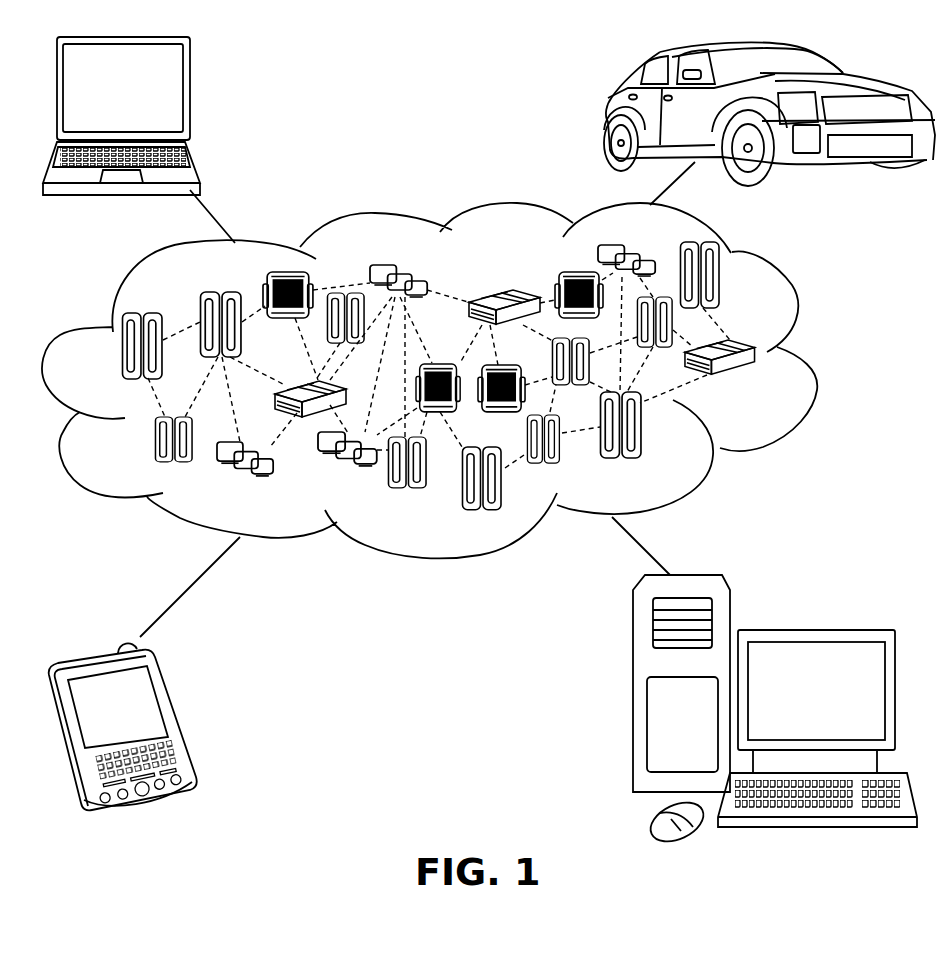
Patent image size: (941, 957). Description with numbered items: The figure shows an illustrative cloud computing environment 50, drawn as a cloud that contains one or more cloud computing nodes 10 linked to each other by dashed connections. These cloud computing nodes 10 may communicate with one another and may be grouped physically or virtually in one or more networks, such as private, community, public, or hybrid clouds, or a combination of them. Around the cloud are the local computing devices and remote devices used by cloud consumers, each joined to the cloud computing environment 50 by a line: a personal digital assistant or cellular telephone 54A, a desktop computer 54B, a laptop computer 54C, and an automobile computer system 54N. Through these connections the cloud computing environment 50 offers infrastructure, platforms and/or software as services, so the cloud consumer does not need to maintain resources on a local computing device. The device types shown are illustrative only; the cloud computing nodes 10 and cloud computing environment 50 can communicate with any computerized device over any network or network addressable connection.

The cloud computing nodes 10 is at (758, 383).
The cloud computing environment 50 is at (814, 354).
The personal digital assistant or cellular telephone 54A is at (178, 722).
The desktop computer 54B is at (813, 628).
The laptop computer 54C is at (192, 98).
The automobile computer system 54N is at (606, 113).